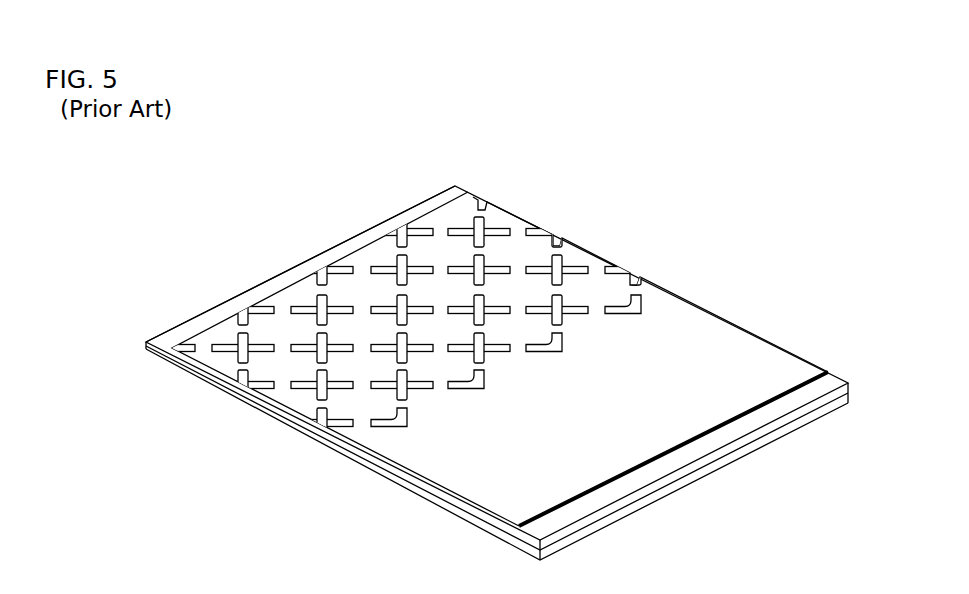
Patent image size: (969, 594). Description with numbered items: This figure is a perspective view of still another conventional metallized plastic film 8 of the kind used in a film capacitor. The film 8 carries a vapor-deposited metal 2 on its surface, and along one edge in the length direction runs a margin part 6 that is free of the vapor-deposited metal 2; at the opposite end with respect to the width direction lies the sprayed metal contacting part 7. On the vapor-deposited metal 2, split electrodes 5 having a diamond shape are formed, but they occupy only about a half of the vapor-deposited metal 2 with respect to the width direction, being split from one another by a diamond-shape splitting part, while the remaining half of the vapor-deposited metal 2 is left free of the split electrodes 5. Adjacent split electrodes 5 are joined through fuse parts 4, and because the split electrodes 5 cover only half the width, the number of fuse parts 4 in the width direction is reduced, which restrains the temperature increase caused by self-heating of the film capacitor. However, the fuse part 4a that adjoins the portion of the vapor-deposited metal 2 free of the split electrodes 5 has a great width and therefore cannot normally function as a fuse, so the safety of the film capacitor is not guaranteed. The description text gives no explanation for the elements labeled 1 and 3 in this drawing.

The substrate 1 is at (757, 450).
The vapor-deposited metal 2 is at (478, 482).
The electrode post 3 is at (397, 428).
The fuse part 4 is at (280, 388).
The fuse part 4a is at (430, 410).
The split electrode 5 is at (437, 250).
The margin part 6 is at (282, 278).
The sprayed metal contacting part 7 is at (492, 360).
The metallized plastic film 8 is at (852, 348).